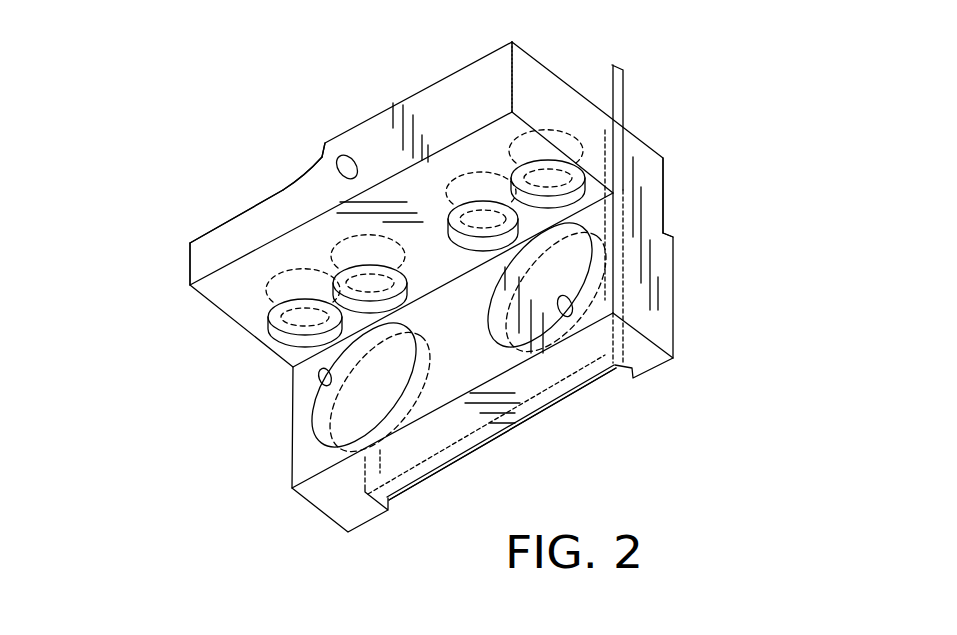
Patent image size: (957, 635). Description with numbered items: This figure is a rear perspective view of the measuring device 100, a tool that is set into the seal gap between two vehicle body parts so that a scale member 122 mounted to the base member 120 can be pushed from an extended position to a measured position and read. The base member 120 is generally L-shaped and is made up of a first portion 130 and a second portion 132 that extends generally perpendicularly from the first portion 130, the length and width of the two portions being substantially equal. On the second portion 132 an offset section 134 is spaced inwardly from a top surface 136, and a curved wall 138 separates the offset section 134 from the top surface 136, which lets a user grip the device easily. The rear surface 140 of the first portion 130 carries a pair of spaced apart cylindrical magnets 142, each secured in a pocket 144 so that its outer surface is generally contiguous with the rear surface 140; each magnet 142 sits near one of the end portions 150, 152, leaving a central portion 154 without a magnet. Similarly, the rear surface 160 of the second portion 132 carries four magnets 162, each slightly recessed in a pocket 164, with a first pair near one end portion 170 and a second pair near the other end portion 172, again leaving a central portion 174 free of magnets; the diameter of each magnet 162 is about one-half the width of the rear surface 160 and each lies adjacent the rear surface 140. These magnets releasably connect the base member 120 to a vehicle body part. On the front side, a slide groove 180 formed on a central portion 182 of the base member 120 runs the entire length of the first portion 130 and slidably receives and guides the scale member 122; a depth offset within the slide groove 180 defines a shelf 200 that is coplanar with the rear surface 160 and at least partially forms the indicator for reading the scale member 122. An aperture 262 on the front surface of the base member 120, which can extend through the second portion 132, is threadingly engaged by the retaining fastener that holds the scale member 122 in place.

The measuring device 100 is at (720, 160).
The base member 120 is at (427, 88).
The scale member 122 is at (623, 78).
The first portion 130 is at (662, 300).
The second portion 132 is at (528, 77).
The offset section 134 is at (258, 207).
The top surface 136 is at (338, 133).
The curved wall 138 is at (318, 162).
The rear surface 140 is at (305, 457).
The magnet 142 is at (350, 410).
The pocket 144 is at (332, 380).
The end portion 150 is at (297, 374).
The end portion 152 is at (602, 212).
The central portion 154 is at (463, 358).
The rear surface 160 is at (233, 288).
The magnet 162 is at (363, 277).
The pocket 164 is at (283, 342).
The end portion 170 is at (207, 292).
The end portion 172 is at (515, 130).
The central portion 174 is at (417, 233).
The slide groove 180 is at (390, 495).
The central portion 182 is at (498, 422).
The shelf 200 is at (668, 232).
The aperture 262 is at (356, 159).